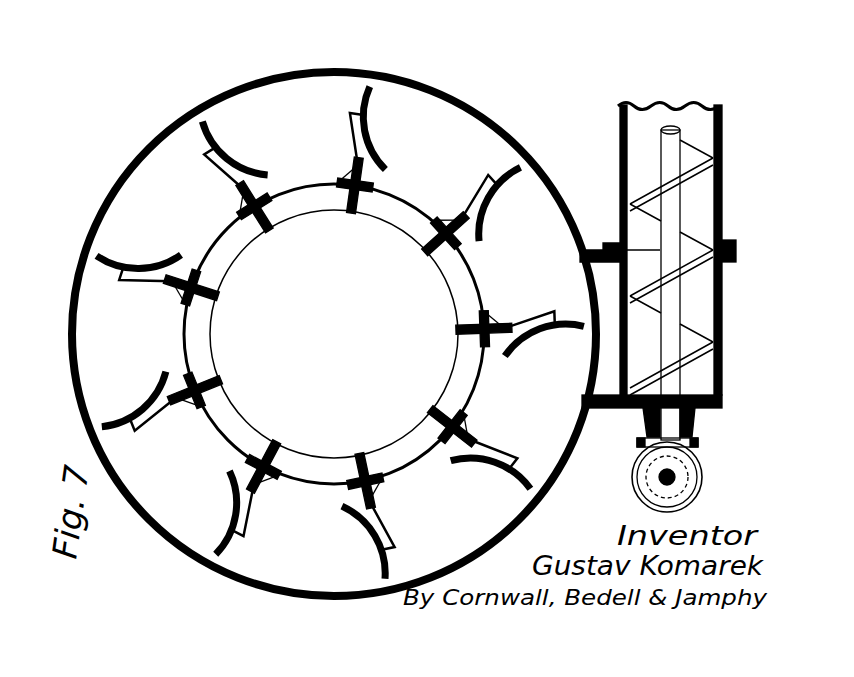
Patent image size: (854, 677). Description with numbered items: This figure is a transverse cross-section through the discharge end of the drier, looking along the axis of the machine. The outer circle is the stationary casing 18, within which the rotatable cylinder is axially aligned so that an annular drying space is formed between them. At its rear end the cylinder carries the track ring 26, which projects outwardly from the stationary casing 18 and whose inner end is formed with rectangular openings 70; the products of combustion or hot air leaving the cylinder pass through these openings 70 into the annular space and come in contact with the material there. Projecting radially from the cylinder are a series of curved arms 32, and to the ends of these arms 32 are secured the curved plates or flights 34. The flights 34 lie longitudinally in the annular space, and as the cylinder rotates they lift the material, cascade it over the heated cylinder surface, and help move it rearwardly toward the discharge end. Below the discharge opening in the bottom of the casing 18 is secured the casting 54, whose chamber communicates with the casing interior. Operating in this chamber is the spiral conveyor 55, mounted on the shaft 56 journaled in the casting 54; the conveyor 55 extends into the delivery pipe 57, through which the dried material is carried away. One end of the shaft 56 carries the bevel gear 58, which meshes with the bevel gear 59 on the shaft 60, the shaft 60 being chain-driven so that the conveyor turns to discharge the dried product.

The stationary casing 18 is at (158, 143).
The track ring 26 is at (457, 303).
The curved arms 32 is at (490, 195).
The curved plates or flights 34 is at (376, 98).
The casting 54 is at (605, 408).
The spiral conveyor 55 is at (703, 347).
The shaft 56 is at (668, 128).
The delivery pipe 57 is at (620, 108).
The bevel gear 58 is at (697, 448).
The bevel gear 59 is at (648, 493).
The shaft 60 is at (672, 478).
The rectangular openings 70 is at (385, 202).